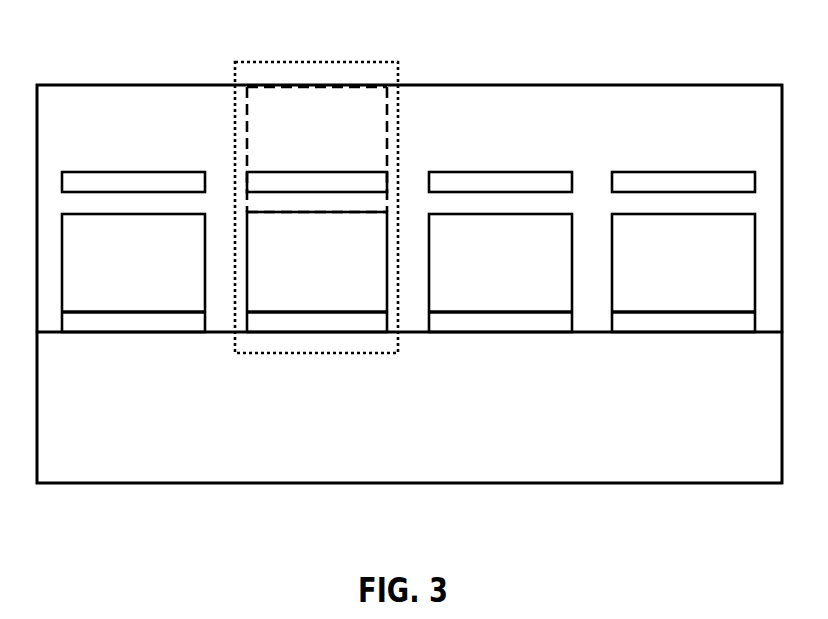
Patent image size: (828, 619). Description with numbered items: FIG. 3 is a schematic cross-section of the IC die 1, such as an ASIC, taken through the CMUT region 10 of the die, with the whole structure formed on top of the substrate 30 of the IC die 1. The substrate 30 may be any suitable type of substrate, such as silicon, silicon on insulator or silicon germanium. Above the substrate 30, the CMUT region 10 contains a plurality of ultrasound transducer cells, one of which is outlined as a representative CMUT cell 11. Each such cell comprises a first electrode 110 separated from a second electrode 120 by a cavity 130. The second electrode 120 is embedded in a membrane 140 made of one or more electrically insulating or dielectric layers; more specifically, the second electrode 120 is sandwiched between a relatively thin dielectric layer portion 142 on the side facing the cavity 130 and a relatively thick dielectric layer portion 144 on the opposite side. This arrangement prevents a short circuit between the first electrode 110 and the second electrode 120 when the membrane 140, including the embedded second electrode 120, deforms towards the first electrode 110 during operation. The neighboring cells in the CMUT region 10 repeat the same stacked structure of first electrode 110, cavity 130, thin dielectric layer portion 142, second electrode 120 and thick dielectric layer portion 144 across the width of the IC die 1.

The IC die 1 is at (100, 483).
The CMUT region 10 is at (647, 97).
The CMUT cell 11 is at (398, 353).
The substrate 30 is at (192, 468).
The first electrode 110 is at (290, 326).
The second electrode 120 is at (285, 182).
The cavity 130 is at (363, 290).
The membrane 140 is at (305, 84).
The relatively thin dielectric layer portion 142 is at (323, 202).
The relatively thick dielectric layer portion 144 is at (285, 117).